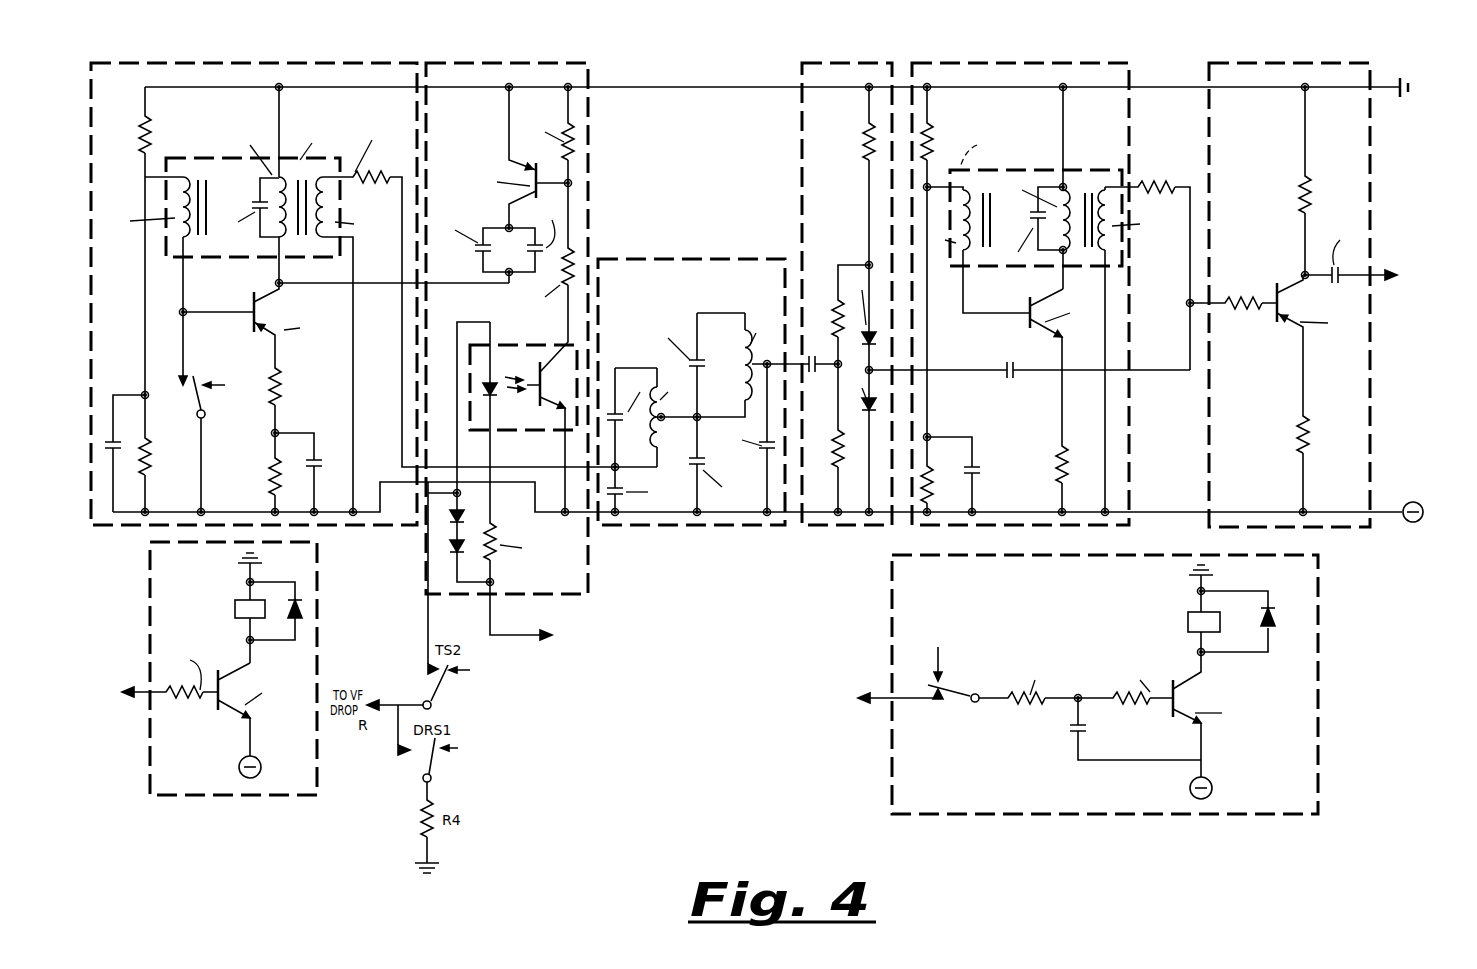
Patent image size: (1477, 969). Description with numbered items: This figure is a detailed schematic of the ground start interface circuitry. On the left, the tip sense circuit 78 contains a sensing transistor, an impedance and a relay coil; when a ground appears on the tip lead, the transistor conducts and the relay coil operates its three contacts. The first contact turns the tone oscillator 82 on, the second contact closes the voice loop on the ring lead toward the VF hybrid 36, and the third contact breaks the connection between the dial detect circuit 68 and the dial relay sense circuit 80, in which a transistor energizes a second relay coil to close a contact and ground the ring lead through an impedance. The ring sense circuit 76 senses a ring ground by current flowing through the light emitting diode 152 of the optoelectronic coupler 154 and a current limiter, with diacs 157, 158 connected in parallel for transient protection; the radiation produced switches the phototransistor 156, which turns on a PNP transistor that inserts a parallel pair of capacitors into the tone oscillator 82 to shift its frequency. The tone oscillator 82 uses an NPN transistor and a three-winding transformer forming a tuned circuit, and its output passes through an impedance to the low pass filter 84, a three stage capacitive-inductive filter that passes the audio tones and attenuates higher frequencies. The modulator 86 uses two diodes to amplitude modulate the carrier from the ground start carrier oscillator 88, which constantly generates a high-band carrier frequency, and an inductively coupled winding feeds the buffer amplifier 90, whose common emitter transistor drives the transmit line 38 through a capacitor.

The tone oscillator 82 is at (342, 62).
The ring sense circuit 76 is at (501, 347).
The low pass filter 84 is at (774, 257).
The modulator 86 is at (797, 70).
The ground start carrier oscillator 88 is at (1122, 62).
The buffer amplifier 90 is at (1327, 280).
The tip sense circuit 78 is at (197, 688).
The dial relay sense circuit 80 is at (1037, 701).
The light emitting diode 152 is at (480, 400).
The optoelectronic coupler 154 is at (522, 421).
The phototransistor 156 is at (531, 414).
The diac 157 is at (448, 514).
The diac 158 is at (448, 546).
The VF hybrid 36 is at (106, 704).
The transmit line 38 is at (1425, 281).
The dial detect circuit 68 is at (846, 712).